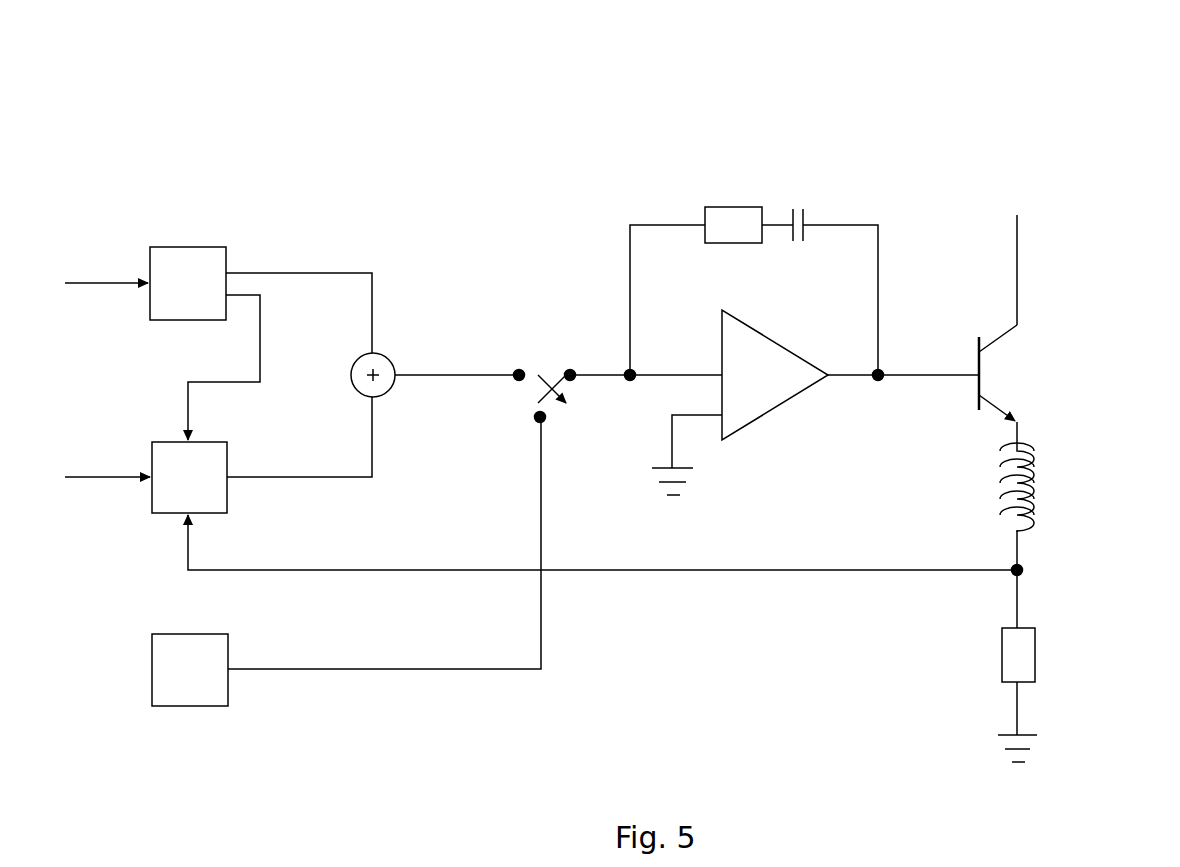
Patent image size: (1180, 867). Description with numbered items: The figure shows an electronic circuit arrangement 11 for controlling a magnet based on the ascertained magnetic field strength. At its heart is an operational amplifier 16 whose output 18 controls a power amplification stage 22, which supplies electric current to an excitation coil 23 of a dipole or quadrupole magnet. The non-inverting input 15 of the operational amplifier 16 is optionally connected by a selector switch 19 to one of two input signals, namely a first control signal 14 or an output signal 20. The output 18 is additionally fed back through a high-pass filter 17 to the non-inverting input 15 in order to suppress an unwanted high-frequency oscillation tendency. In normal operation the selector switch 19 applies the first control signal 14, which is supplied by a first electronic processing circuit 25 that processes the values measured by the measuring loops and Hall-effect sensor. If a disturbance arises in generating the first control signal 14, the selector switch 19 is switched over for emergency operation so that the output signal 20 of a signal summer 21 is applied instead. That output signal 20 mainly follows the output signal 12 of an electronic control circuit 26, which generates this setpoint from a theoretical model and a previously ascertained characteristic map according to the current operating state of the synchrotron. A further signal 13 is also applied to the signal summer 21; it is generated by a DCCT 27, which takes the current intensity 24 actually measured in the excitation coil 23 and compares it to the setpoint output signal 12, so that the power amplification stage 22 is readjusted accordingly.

The electronic circuit arrangement 11 is at (1073, 148).
The output signal 12 is at (300, 273).
The signal 13 is at (300, 477).
The first control signal 14 is at (462, 670).
The non-inverting input 15 is at (720, 372).
The operational amplifier 16 is at (748, 387).
The high-pass filter 17 is at (765, 188).
The output 18 is at (836, 378).
The selector switch 19 is at (541, 360).
The output signal of signal summer 20 is at (452, 373).
The signal summer 21 is at (388, 391).
The power amplification stage 22 is at (1035, 300).
The excitation coil 23 is at (1040, 480).
The current intensity 24 is at (1045, 648).
The first electronic processing circuit 25 is at (175, 683).
The electronic control circuit 26 is at (175, 297).
The DCCT 27 is at (175, 491).